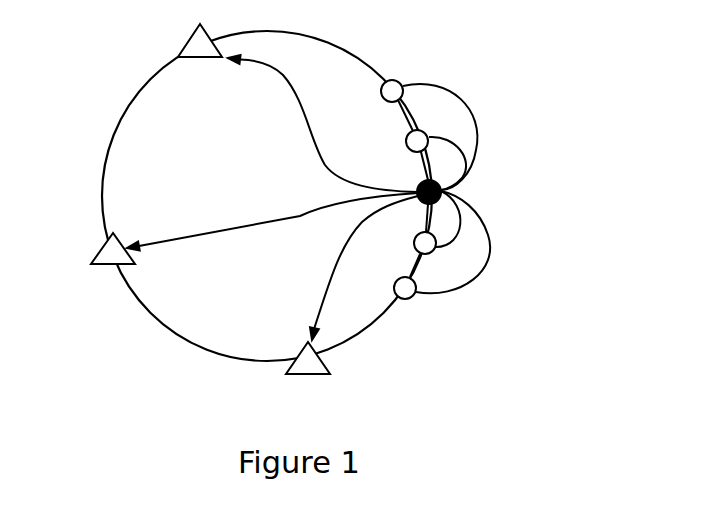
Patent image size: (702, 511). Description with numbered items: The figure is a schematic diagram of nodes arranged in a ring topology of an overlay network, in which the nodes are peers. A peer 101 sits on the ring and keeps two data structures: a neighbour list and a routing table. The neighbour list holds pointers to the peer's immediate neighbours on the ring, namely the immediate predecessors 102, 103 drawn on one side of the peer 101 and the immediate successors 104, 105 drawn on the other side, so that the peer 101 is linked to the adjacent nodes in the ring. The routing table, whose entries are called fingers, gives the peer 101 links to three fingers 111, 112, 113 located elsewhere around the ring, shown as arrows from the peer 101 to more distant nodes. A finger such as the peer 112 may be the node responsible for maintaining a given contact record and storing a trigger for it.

The peer 101 is at (443, 191).
The immediate predecessor 102 is at (423, 132).
The immediate predecessor 103 is at (393, 80).
The immediate successor 104 is at (431, 251).
The immediate successor 105 is at (407, 300).
The finger 111 is at (307, 375).
The finger 112 is at (104, 265).
The finger 113 is at (188, 40).